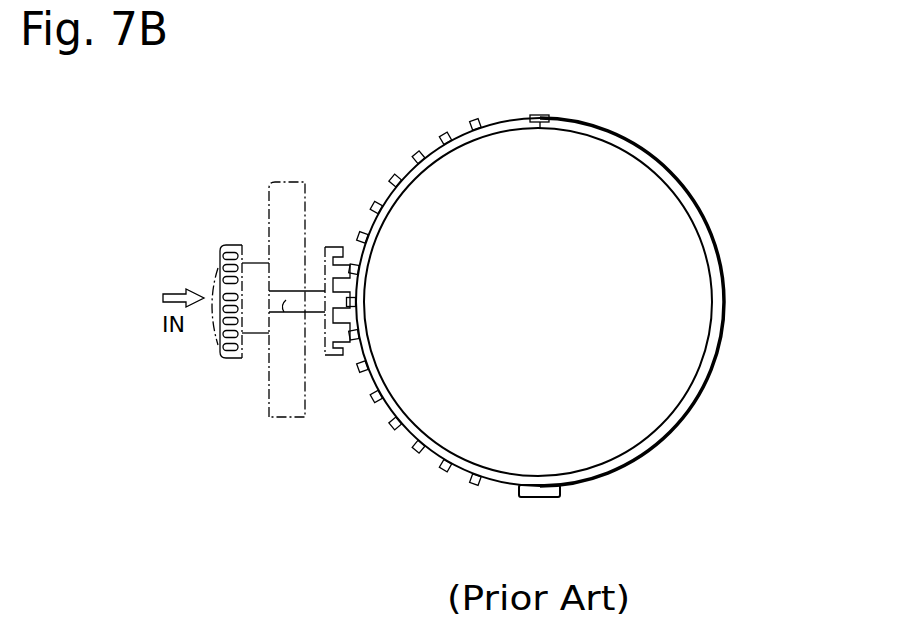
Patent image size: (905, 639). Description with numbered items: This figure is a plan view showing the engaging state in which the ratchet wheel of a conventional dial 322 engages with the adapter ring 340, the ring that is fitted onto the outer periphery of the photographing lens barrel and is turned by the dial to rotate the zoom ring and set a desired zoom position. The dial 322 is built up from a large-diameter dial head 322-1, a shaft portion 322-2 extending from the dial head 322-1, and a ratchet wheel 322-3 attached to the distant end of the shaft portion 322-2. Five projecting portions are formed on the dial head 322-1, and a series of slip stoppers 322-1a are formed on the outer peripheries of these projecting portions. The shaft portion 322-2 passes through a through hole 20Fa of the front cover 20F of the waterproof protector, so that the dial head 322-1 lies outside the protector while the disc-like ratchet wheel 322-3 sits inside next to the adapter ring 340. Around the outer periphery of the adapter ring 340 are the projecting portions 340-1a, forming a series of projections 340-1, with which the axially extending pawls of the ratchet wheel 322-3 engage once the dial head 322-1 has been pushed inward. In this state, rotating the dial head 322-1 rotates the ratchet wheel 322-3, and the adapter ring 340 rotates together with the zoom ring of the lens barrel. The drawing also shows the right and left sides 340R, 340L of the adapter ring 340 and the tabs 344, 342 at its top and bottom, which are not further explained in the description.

The adapter ring 340 is at (565, 307).
The right half of ring member 340R is at (697, 400).
The left half of ring member 340L is at (490, 484).
The ring contact tabs 340-1 is at (386, 306).
The projecting portions 340-1a is at (437, 464).
The top terminal tab 344 is at (540, 115).
The bottom terminal 342 is at (560, 491).
The dial 322 is at (255, 318).
The dial head 322-1 is at (217, 333).
The slip stoppers 322-1a is at (212, 268).
The shaft portion 322-2 is at (279, 290).
The ratchet wheel 322-3 is at (340, 247).
The front cover 20F is at (315, 331).
The through hole 20Fa is at (283, 308).